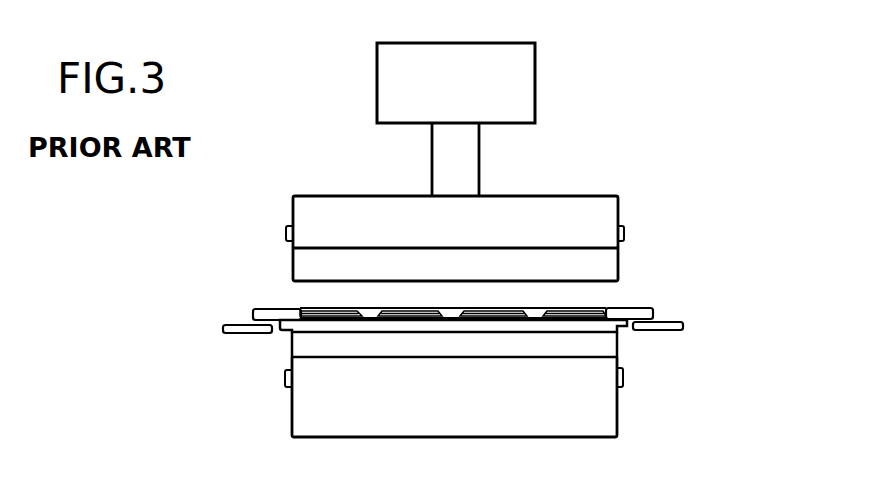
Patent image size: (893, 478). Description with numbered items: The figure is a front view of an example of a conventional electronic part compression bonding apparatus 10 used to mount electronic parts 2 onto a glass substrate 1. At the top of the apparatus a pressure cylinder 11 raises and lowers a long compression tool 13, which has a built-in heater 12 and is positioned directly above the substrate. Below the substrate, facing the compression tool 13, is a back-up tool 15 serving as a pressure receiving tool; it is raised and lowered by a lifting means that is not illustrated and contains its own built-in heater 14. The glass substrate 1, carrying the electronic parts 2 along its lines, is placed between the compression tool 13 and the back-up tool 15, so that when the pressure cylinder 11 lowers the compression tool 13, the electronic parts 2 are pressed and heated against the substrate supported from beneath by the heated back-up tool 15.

The glass substrate 1 is at (631, 303).
The electronic parts 2 is at (317, 306).
The electronic part compression bonding apparatus 10 is at (648, 158).
The pressure cylinder 11 is at (535, 80).
The heater 12 is at (624, 233).
The compression tool 13 is at (620, 259).
The heater 14 is at (623, 378).
The back-up tool 15 is at (622, 341).